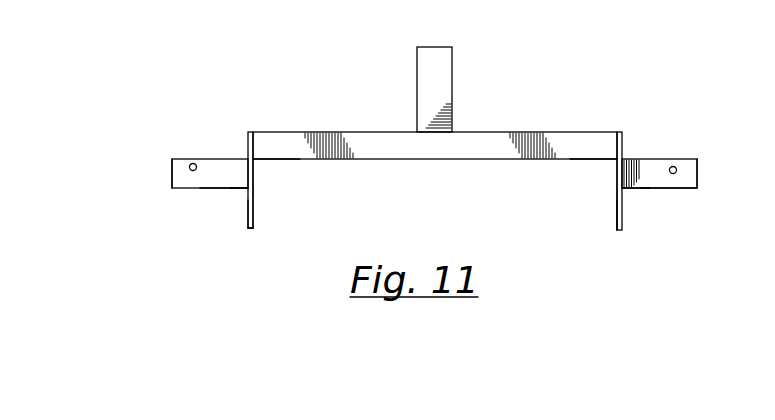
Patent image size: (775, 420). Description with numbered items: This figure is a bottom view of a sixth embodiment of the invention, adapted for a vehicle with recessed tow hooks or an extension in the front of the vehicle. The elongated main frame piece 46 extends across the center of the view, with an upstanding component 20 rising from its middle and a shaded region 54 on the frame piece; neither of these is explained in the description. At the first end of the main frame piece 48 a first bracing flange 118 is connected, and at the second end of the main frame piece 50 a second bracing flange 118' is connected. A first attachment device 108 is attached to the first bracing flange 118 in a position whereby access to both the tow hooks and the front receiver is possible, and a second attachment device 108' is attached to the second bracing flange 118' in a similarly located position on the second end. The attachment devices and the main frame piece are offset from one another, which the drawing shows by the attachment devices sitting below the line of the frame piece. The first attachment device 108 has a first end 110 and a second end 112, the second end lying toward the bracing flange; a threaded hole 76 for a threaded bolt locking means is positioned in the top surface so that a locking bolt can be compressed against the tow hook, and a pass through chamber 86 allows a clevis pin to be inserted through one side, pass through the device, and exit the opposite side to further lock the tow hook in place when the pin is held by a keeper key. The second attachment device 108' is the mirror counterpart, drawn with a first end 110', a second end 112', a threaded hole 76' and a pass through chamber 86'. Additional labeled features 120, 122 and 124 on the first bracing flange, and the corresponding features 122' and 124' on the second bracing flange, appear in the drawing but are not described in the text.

The post 20 is at (425, 63).
The cross member portion 54 is at (397, 147).
The main frame piece 46 is at (423, 160).
The first end of the main frame piece 48 is at (263, 160).
The second end of the main frame piece 50 is at (605, 162).
The left side plate 120 is at (248, 132).
The left side plate inner face 122 is at (322, 197).
The first bracing flange 118 is at (224, 251).
The left side plate lower edge 124 is at (280, 241).
The attachment device 108 is at (198, 235).
The first end of the attachment device 110 is at (170, 149).
The pass through chamber 86 is at (224, 154).
The threaded hole 76 is at (195, 125).
The second end of the attachment device 112 is at (210, 211).
The right side plate inner face 122' is at (576, 197).
The right side plate lower edge 124' is at (581, 238).
The second bracing flange 118' is at (592, 224).
The right flange inner corner 112' is at (658, 236).
The right flange body 86' is at (669, 207).
The right mounting hole 76' is at (690, 143).
The right flange outer end 110' is at (728, 163).
The second attachment device 108' is at (686, 205).